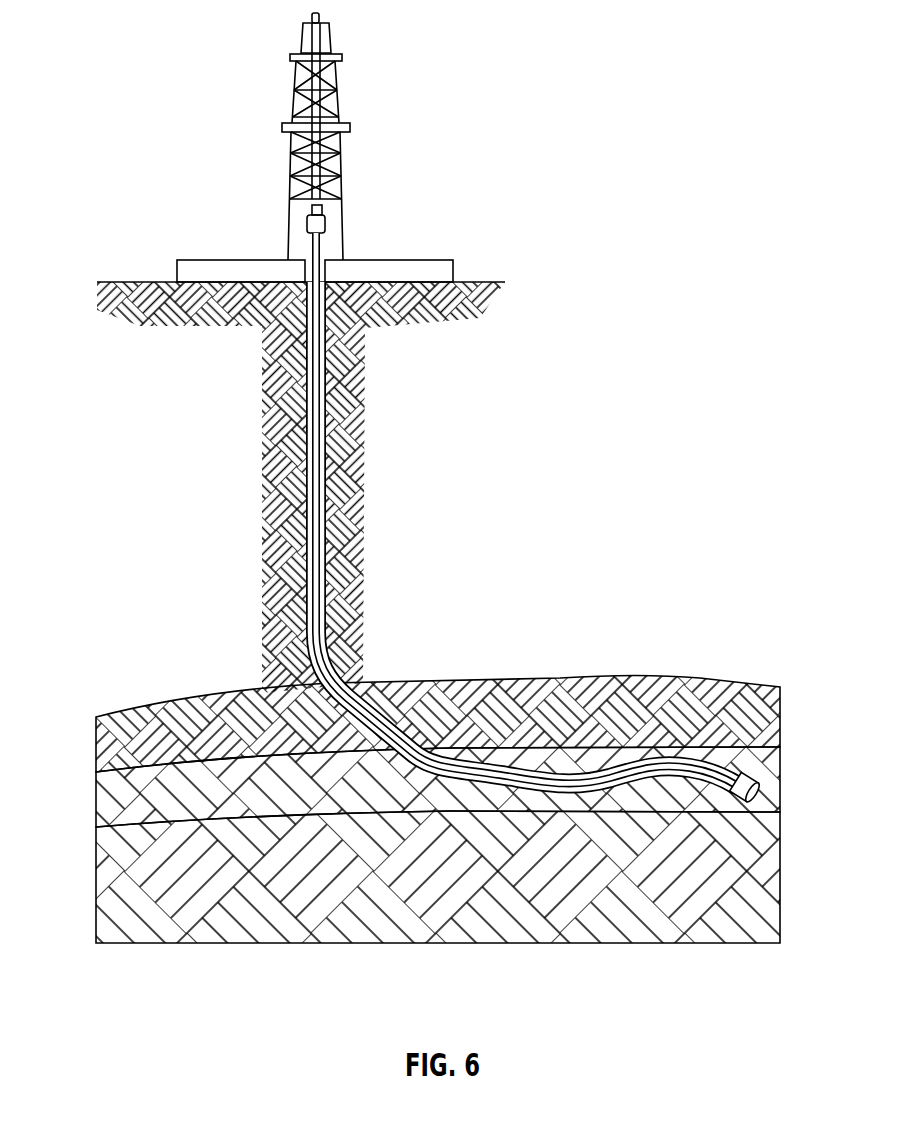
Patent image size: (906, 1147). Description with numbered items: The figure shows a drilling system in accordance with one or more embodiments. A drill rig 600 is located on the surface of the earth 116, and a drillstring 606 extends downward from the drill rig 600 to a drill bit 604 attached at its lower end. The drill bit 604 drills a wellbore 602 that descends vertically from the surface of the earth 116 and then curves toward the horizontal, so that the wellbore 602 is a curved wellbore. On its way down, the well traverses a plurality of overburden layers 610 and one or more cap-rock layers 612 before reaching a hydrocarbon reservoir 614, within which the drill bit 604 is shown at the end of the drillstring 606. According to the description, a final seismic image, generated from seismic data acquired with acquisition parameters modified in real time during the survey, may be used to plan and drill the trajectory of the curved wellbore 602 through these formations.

The drill rig 600 is at (338, 157).
The wellbore 602 is at (306, 420).
The drill bit 604 is at (744, 775).
The drillstring 606 is at (318, 247).
The overburden layers 610 is at (358, 412).
The cap-rock layers 612 is at (103, 742).
The hydrocarbon reservoir 614 is at (103, 808).
The surface of the earth 116 is at (493, 282).